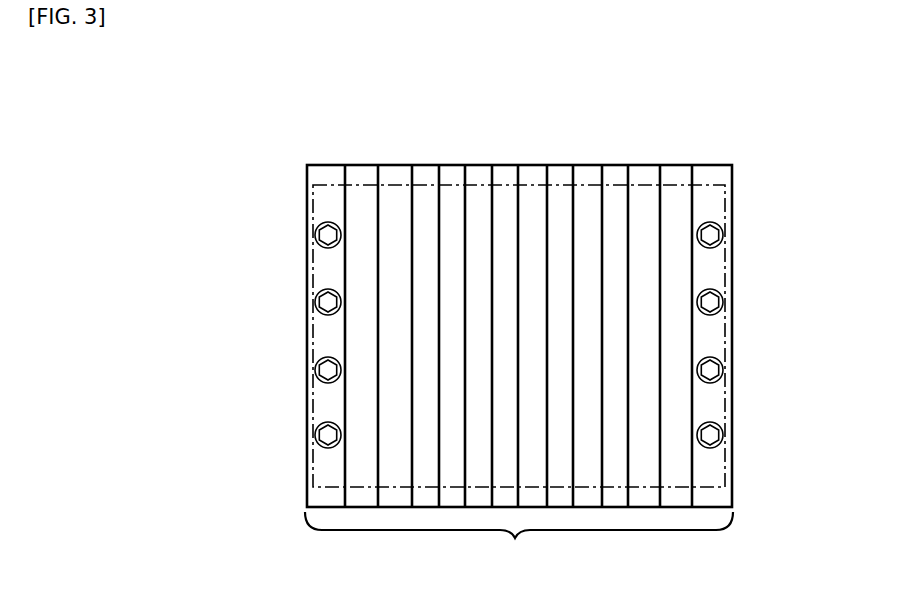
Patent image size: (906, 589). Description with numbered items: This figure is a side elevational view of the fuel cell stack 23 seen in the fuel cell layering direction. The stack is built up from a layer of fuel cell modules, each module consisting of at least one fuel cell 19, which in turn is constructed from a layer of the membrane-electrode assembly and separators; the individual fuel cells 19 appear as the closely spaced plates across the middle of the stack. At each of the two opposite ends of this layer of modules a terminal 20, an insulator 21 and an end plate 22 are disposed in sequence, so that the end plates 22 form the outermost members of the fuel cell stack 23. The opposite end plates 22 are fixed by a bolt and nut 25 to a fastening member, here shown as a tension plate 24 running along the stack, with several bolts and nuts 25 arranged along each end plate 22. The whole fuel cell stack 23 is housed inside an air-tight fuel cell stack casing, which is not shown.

The fuel cell 19 is at (612, 176).
The terminal 20 is at (397, 176).
The insulator 21 is at (363, 176).
The end plate 22 is at (326, 176).
The fuel cell stack 23 is at (519, 369).
The tension plate 24 is at (313, 335).
The bolt and nut 25 is at (328, 235).